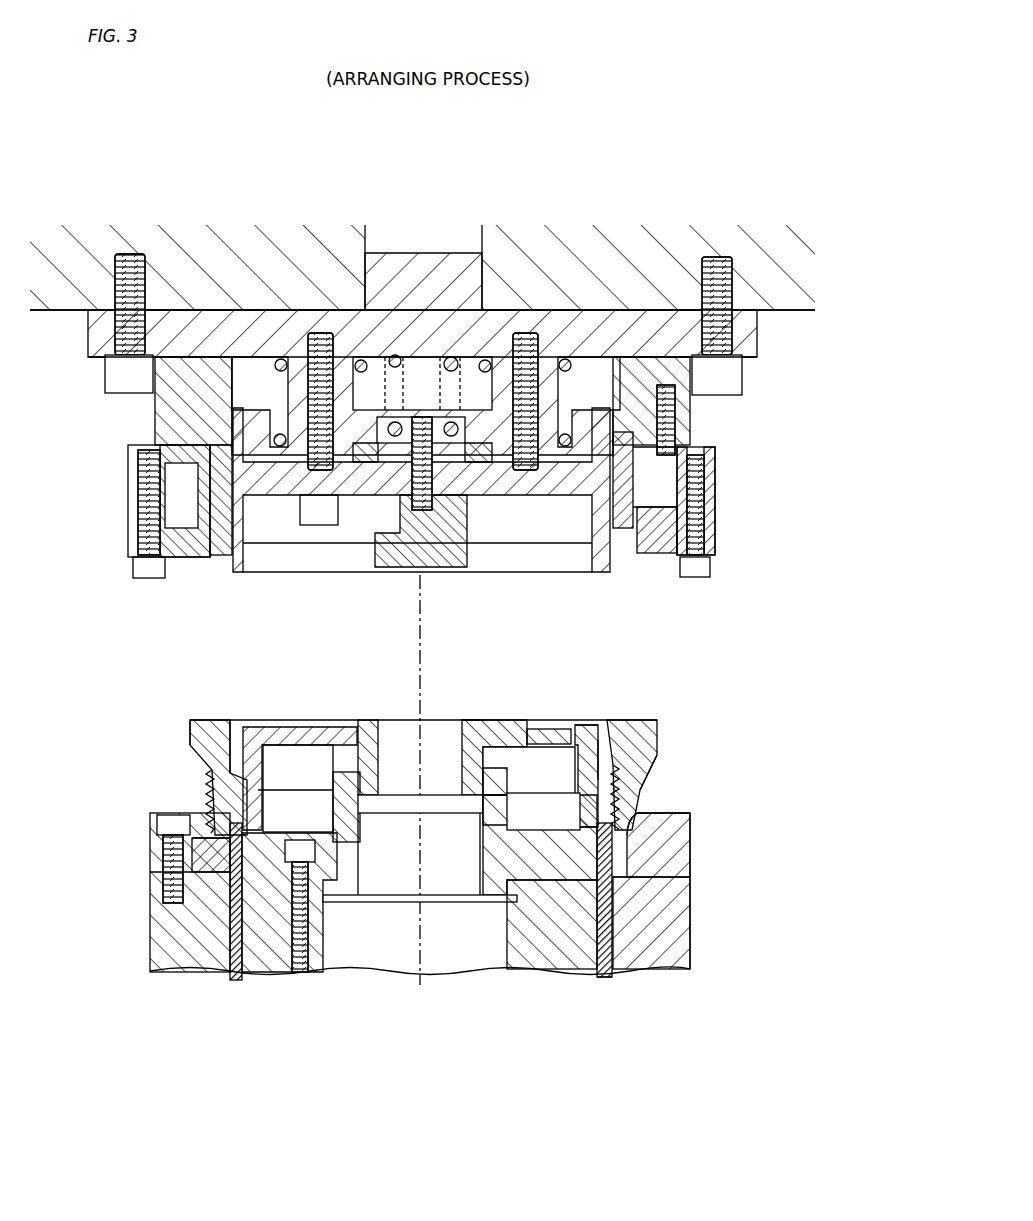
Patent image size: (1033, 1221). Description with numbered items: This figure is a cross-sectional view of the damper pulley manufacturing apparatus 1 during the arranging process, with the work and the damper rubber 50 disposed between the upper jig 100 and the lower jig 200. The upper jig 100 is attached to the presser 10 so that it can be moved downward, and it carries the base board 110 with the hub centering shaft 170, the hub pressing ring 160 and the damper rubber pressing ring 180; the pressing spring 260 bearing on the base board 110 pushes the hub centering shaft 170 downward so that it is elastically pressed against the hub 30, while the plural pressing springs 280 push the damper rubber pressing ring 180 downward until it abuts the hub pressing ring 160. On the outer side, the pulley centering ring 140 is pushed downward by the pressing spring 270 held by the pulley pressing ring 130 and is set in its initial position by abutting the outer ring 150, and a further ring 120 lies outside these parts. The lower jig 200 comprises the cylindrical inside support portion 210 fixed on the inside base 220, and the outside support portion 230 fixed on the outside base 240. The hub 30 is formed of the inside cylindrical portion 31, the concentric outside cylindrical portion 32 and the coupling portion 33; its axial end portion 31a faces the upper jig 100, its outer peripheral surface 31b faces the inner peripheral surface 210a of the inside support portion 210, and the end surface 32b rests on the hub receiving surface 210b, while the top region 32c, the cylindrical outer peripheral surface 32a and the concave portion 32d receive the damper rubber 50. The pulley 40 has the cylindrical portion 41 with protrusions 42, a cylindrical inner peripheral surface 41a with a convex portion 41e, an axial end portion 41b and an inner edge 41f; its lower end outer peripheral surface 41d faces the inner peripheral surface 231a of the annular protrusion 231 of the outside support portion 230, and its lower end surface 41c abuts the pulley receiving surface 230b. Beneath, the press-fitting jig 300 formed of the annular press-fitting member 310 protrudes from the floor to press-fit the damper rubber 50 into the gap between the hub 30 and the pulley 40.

The damper pulley manufacturing apparatus 1 is at (203, 134).
The presser 10 is at (530, 248).
The base board 110 is at (598, 330).
The pressing springs 280 is at (280, 358).
The pressing spring 260 is at (445, 357).
The hub pressing ring 160 is at (480, 478).
The damper rubber pressing ring 180 is at (312, 560).
The hub centering shaft 170 is at (402, 548).
The side block 120 is at (175, 412).
The pulley pressing ring 130 is at (222, 530).
The pressing spring 270 is at (128, 495).
The pulley centering ring 140 is at (647, 538).
The outer ring 150 is at (712, 497).
The upper jig 100 is at (726, 428).
The lower jig 200 is at (722, 665).
The pulley 40 is at (627, 730).
The protrusions 42 is at (208, 797).
The cylindrical portion 41 is at (617, 777).
The cylindrical inner peripheral surface 41a is at (232, 802).
The convex portion 41e is at (245, 790).
The axial end portion 41b is at (190, 720).
The flange inner edge 41f is at (226, 720).
The hub 30 is at (500, 722).
The inside cylindrical portion 31 is at (472, 762).
The axial end portion 31a is at (468, 725).
The outer peripheral surface 31b is at (497, 790).
The coupling portion 33 is at (520, 735).
The outside cylindrical portion 32 is at (585, 755).
The hub wall top 32c is at (588, 728).
The cylindrical outer peripheral surface 32a is at (600, 775).
The concave portion 32d is at (641, 762).
The end surface 32b is at (590, 832).
The outside support portion 230 is at (690, 843).
The pulley receiving surface 230b is at (636, 840).
The inner peripheral surface 231a is at (632, 825).
The annular protrusion 231 is at (667, 823).
The damper rubber 50 is at (615, 898).
The outside base 240 is at (677, 927).
The inside support portion 210 is at (493, 880).
The hub receiving surface 210b is at (582, 832).
The inner peripheral surface 210a is at (483, 790).
The inside base 220 is at (562, 950).
The annular press-fitting member 310 is at (612, 980).
The press-fitting jig 300 is at (630, 1022).
The lower end surface 41c is at (157, 897).
The lower end outer peripheral surface 41d is at (158, 842).